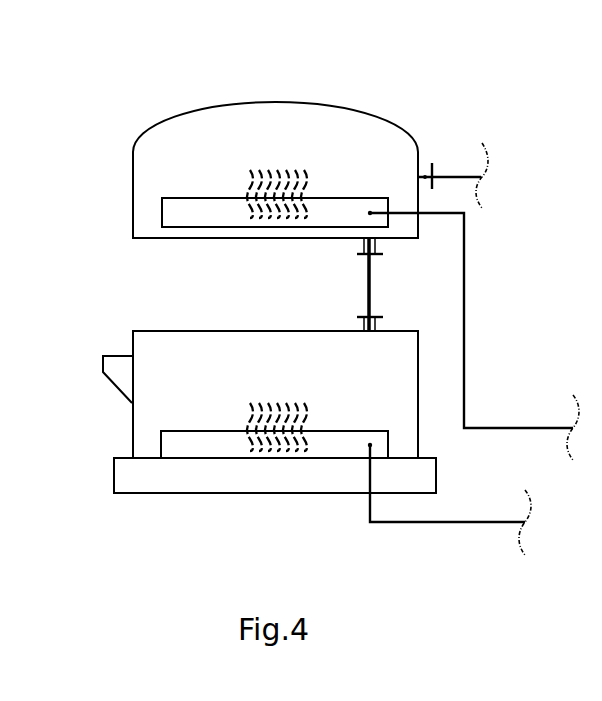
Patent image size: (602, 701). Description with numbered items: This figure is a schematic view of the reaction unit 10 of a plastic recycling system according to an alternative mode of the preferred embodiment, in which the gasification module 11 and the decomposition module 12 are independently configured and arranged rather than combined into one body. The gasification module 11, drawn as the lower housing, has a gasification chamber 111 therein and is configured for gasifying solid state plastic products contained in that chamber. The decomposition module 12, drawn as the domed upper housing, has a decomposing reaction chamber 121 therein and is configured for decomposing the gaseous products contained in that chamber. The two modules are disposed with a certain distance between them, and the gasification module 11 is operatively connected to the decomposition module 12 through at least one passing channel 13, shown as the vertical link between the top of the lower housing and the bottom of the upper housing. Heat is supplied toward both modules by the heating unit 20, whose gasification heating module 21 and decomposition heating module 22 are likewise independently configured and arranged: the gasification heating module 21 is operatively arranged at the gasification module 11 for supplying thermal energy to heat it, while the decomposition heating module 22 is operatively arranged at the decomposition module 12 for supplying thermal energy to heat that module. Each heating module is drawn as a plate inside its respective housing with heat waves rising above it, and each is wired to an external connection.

The reaction unit 10 is at (310, 288).
The gasification module 11 is at (295, 431).
The gasification chamber 111 is at (200, 363).
The decomposition module 12 is at (310, 287).
The decomposing reaction chamber 121 is at (202, 179).
The passing channel 13 is at (368, 275).
The heating unit 20 is at (343, 494).
The gasification heating module 21 is at (274, 494).
The decomposition heating module 22 is at (168, 217).